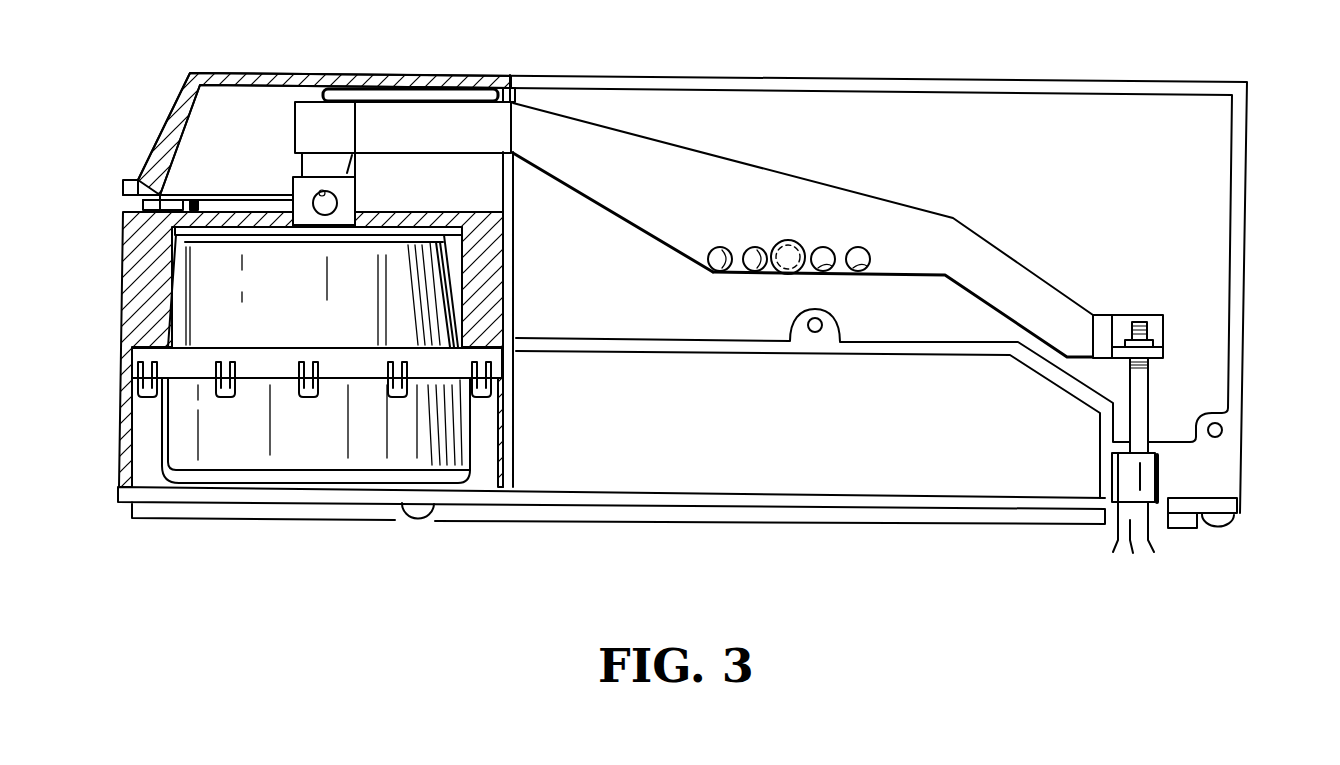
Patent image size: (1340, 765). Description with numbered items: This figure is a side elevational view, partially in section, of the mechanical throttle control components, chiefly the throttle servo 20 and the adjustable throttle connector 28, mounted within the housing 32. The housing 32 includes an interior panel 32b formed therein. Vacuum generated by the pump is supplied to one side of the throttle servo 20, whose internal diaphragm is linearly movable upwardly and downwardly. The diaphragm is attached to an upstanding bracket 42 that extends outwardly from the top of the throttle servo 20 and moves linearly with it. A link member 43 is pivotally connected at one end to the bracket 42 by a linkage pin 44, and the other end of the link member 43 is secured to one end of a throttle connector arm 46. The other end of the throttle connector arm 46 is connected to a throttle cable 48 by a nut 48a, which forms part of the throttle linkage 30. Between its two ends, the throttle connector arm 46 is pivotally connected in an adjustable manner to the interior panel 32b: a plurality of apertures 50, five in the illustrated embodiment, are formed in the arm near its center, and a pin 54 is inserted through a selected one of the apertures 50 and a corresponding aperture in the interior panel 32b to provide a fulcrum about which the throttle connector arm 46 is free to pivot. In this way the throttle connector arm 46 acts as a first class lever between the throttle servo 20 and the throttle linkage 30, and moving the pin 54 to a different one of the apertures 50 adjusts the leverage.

The throttle servo 20 is at (285, 460).
The adjustable throttle connector 28 is at (812, 151).
The throttle linkage 30 is at (1142, 478).
The housing 32 is at (1262, 207).
The interior panel 32b is at (997, 133).
The upstanding bracket 42 is at (298, 183).
The link member 43 is at (323, 167).
The linkage pin 44 is at (330, 204).
The throttle connector arm 46 is at (610, 193).
The throttle cable 48 is at (1140, 390).
The nut 48a is at (1163, 343).
The apertures 50 is at (746, 266).
The pin 54 is at (782, 269).